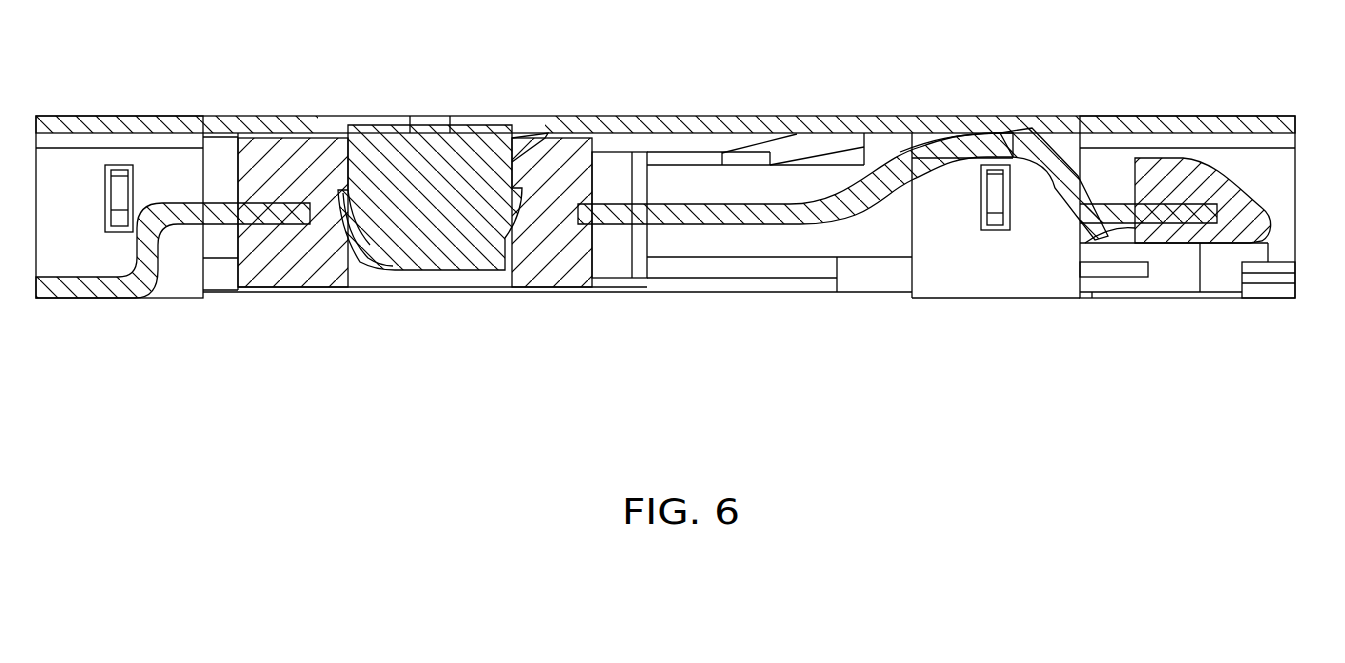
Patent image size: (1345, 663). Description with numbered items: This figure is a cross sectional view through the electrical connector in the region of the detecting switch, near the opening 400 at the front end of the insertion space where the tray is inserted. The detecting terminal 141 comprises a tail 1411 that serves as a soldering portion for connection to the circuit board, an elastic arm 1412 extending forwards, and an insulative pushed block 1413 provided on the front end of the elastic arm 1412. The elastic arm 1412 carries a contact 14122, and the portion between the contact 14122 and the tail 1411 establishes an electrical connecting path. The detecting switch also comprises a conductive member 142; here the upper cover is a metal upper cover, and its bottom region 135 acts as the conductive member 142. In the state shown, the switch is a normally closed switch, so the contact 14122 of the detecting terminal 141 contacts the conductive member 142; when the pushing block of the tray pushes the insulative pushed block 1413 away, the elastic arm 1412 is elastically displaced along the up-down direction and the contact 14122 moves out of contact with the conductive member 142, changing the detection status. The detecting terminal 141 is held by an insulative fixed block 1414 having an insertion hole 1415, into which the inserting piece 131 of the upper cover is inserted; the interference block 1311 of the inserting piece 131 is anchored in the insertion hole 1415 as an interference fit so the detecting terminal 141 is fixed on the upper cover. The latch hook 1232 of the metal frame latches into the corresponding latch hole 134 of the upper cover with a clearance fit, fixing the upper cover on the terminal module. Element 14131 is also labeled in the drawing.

The opening 400 is at (1298, 130).
The tail 1411 is at (82, 292).
The latch hole 134 is at (100, 200).
The latch hook 1232 is at (121, 186).
The fixed block 1414 is at (300, 265).
The inserting piece 131 is at (463, 228).
The interference block 1311 is at (395, 268).
The insertion hole 1415 is at (499, 284).
The detecting terminal 141 is at (940, 197).
The elastic arm 1412 is at (737, 208).
The contact 14122 is at (1022, 140).
The bottom region 135 is at (1006, 125).
The insulative pushed block 1413 is at (1274, 228).
The rounded support block 14131 is at (1236, 140).
The conductive member 142 is at (1052, 142).